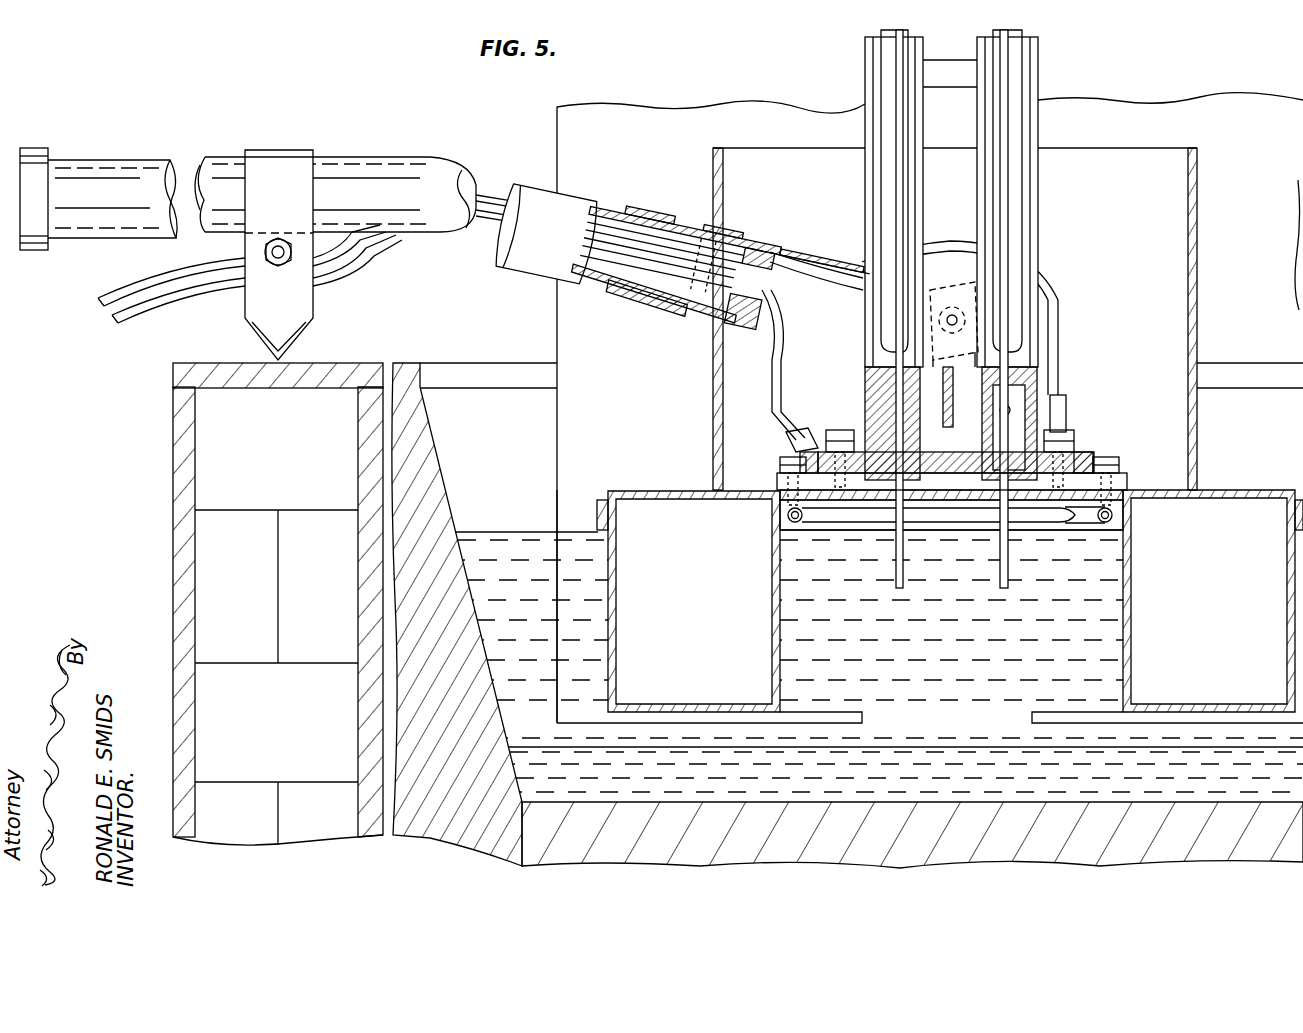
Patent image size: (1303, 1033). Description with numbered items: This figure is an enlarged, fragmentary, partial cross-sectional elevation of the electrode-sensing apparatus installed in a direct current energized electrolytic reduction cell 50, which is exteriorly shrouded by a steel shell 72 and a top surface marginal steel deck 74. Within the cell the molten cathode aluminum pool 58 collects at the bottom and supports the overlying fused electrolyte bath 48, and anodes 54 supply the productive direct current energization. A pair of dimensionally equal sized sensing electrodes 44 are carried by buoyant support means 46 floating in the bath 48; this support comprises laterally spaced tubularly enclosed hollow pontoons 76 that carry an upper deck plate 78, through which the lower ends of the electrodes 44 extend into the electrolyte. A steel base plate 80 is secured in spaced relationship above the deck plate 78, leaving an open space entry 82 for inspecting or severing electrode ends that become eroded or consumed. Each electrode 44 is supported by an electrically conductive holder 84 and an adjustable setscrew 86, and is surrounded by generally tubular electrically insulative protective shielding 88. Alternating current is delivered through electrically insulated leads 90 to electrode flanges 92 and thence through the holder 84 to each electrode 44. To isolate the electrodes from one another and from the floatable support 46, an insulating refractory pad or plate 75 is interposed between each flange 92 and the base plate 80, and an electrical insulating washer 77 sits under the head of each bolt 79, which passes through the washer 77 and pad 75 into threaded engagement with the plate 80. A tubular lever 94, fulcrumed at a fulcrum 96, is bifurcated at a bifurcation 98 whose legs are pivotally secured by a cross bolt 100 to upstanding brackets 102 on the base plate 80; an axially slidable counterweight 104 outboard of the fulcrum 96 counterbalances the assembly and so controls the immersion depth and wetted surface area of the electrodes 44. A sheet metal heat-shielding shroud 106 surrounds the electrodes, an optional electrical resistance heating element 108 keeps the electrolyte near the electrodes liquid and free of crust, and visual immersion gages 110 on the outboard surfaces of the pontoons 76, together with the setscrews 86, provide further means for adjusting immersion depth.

The sensing electrodes 44 is at (1005, 590).
The buoyant support means 46 is at (618, 657).
The electrolyte bath 48 is at (492, 535).
The electrolytic reduction cell 50 is at (358, 724).
The anodes 54 is at (663, 108).
The molten cathode aluminum pool 58 is at (944, 783).
The steel shell 72 is at (173, 440).
The top surface marginal steel deck 74 is at (220, 363).
The insulating pad or plate 75 is at (1090, 462).
The pontoons 76 is at (705, 605).
The electrical insulating washer 77 is at (822, 438).
The upper deck plate 78 is at (852, 502).
The bolt 79 is at (840, 430).
The base plate 80 is at (1120, 468).
The open space entry 82 is at (953, 476).
The electrically conductive holder 84 is at (868, 388).
The setscrew 86 is at (1010, 406).
The protective shielding 88 is at (865, 66).
The electrically insulated leads 90 is at (98, 326).
The electrode flanges 92 is at (796, 444).
The tubular lever 94 is at (356, 160).
The fulcrum 96 is at (305, 340).
The bifurcation 98 is at (852, 272).
The cross bolt 100 is at (951, 306).
The upstanding brackets 102 is at (968, 246).
The counterweight 104 is at (38, 150).
The heat-shielding shroud 106 is at (1197, 195).
The heating element 108 is at (1092, 523).
The visual immersion gages 110 is at (600, 500).